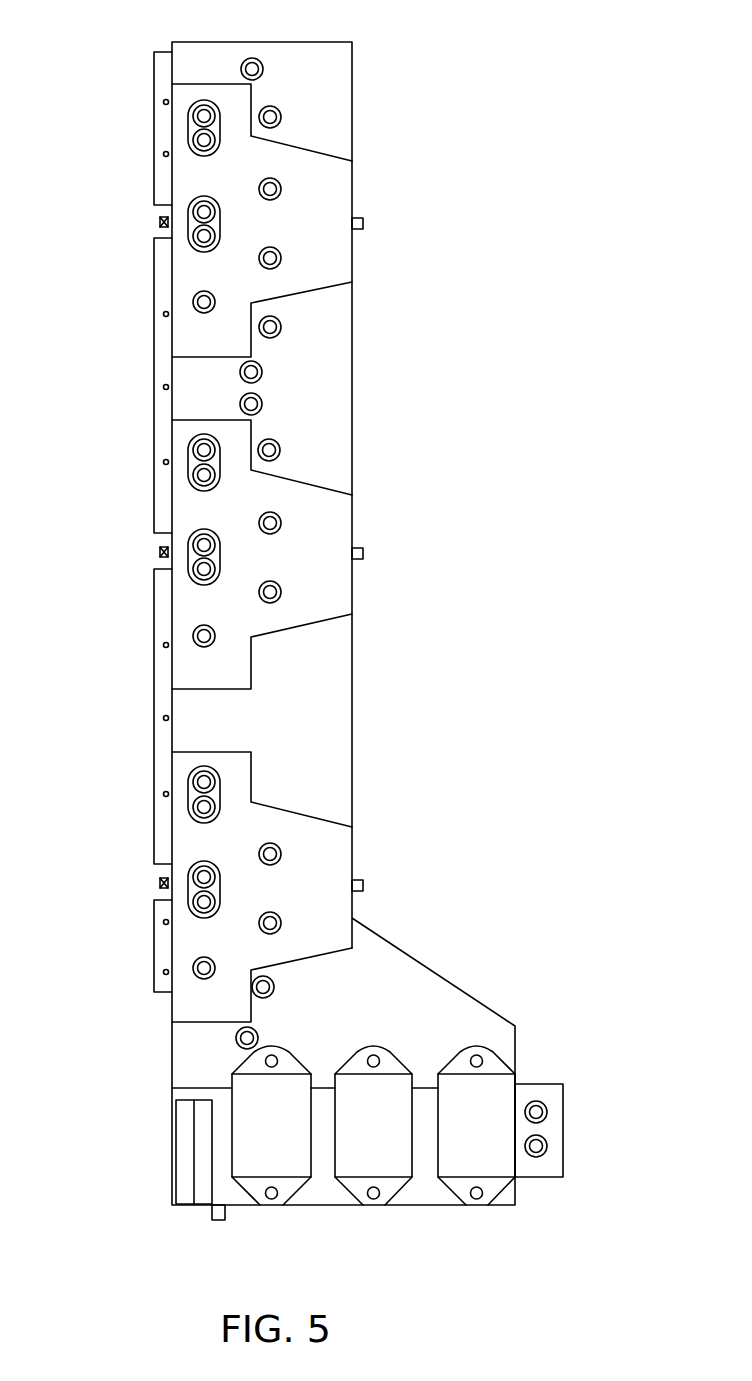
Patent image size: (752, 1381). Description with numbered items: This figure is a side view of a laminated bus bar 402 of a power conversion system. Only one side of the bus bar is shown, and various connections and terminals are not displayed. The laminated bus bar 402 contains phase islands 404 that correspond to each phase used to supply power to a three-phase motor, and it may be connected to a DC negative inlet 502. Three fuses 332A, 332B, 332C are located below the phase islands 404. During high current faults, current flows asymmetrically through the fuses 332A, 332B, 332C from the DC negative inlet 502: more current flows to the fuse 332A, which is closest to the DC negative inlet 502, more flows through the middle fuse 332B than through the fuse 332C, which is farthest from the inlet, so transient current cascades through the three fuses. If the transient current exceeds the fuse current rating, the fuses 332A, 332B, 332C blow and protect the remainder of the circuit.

The laminated bus bar 402 is at (140, 32).
The phase islands 404 is at (352, 189).
The fuse 332A is at (476, 1206).
The fuse 332B is at (374, 1206).
The fuse 332C is at (271, 1206).
The DC negative inlet 502 is at (538, 1084).